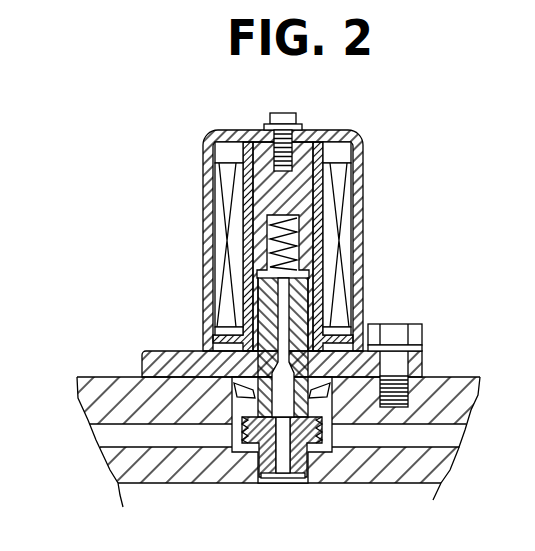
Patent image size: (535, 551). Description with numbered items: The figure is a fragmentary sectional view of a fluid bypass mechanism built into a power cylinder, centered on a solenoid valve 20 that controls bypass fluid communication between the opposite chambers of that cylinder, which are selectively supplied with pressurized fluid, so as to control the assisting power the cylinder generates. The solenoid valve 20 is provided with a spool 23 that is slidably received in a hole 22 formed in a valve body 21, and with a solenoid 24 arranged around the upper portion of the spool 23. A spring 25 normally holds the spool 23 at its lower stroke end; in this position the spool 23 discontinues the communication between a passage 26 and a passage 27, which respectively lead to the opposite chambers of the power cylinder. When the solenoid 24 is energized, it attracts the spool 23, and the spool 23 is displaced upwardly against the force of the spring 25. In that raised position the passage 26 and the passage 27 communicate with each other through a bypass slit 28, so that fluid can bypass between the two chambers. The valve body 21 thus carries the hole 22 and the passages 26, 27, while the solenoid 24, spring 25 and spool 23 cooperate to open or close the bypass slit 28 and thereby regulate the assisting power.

The solenoid valve 20 is at (369, 161).
The valve body 21 is at (168, 352).
The hole 22 is at (262, 318).
The spool 23 is at (300, 310).
The solenoid 24 is at (340, 190).
The spring 25 is at (268, 230).
The passage 26 is at (110, 445).
The passage 27 is at (284, 479).
The bypass slit 28 is at (266, 412).